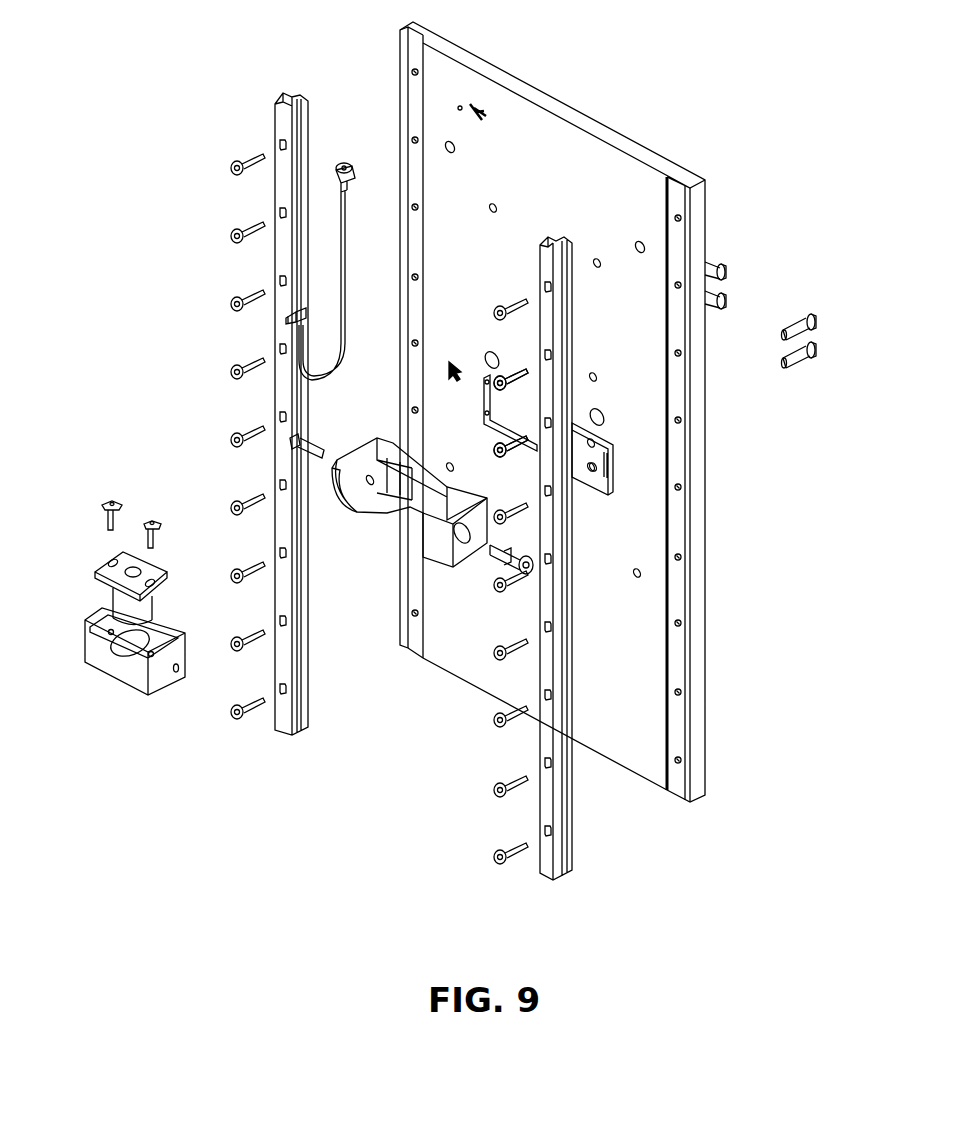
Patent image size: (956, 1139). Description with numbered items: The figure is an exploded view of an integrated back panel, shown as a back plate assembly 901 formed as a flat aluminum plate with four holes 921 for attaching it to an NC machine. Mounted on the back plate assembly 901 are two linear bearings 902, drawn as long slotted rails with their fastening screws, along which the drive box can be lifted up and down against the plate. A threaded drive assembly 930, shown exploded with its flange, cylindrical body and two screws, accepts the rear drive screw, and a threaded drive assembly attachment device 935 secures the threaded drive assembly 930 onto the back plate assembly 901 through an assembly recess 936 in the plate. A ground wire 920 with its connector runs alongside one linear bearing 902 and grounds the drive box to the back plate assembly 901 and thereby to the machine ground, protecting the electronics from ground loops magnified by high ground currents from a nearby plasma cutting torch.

The back plate assembly 901 is at (710, 705).
The linear bearings 902 is at (540, 737).
The ground wire 920 is at (347, 222).
The holes 921 is at (641, 246).
The threaded drive assembly 930 is at (88, 482).
The threaded drive assembly attachment device 935 is at (374, 533).
The assembly recess 936 is at (508, 410).